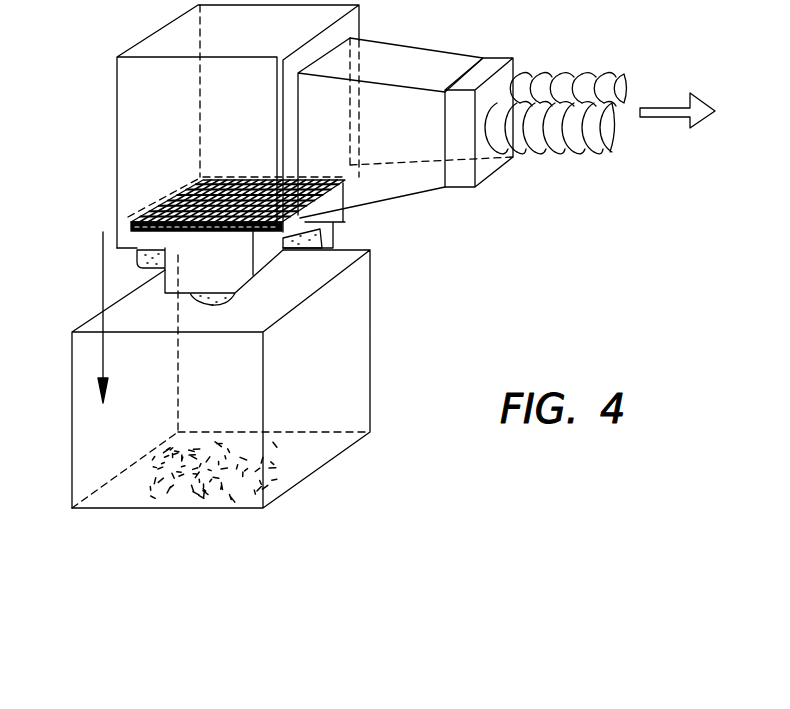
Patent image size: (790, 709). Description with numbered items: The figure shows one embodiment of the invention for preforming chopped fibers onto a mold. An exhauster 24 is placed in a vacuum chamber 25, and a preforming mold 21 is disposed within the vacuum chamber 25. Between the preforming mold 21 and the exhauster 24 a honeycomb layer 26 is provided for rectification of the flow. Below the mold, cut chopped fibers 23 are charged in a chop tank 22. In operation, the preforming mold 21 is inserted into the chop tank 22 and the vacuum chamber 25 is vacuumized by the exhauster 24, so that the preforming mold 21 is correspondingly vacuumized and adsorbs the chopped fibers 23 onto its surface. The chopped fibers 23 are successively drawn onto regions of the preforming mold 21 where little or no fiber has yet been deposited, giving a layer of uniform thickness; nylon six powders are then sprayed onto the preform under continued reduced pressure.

The preforming mold 21 is at (195, 263).
The chop tank 22 is at (301, 373).
The chopped fibers 23 is at (266, 469).
The exhauster 24 is at (620, 95).
The vacuum chamber 25 is at (153, 135).
The honeycomb layer 26 is at (343, 221).